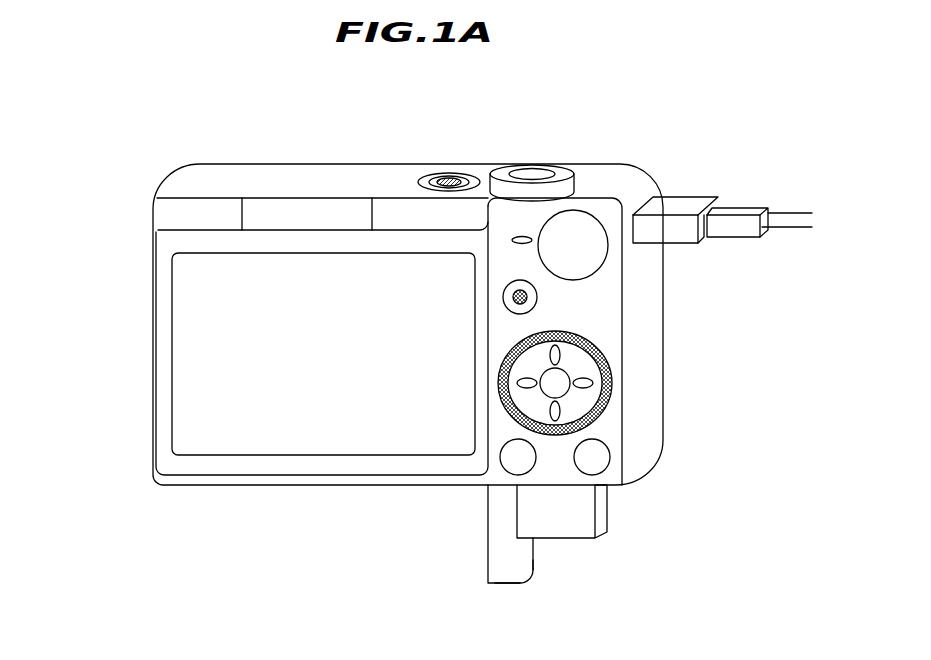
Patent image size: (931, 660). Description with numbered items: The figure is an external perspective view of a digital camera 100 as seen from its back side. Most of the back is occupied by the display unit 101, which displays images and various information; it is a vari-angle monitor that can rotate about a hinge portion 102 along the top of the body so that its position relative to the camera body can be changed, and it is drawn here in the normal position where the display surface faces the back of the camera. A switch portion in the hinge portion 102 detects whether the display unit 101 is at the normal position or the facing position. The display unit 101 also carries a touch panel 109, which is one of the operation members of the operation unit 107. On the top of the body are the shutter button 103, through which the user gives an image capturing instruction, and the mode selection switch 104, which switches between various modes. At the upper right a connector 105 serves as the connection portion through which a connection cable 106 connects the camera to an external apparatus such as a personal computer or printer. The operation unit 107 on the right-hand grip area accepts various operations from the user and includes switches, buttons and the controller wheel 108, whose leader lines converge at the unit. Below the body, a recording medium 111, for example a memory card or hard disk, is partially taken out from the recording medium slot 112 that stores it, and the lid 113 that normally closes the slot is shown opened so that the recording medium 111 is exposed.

The camera 100 is at (252, 112).
The display unit 101 is at (205, 338).
The touch panel 109 is at (323, 354).
The hinge portion 102 is at (158, 215).
The shutter button 103 is at (531, 173).
The mode selection switch 104 is at (590, 228).
The connector 105 is at (658, 197).
The connection cable 106 is at (738, 211).
The operation unit 107 is at (552, 202).
The controller wheel 108 is at (510, 353).
The recording medium 111 is at (570, 525).
The recording medium slot 112 is at (530, 488).
The lid 113 is at (508, 570).